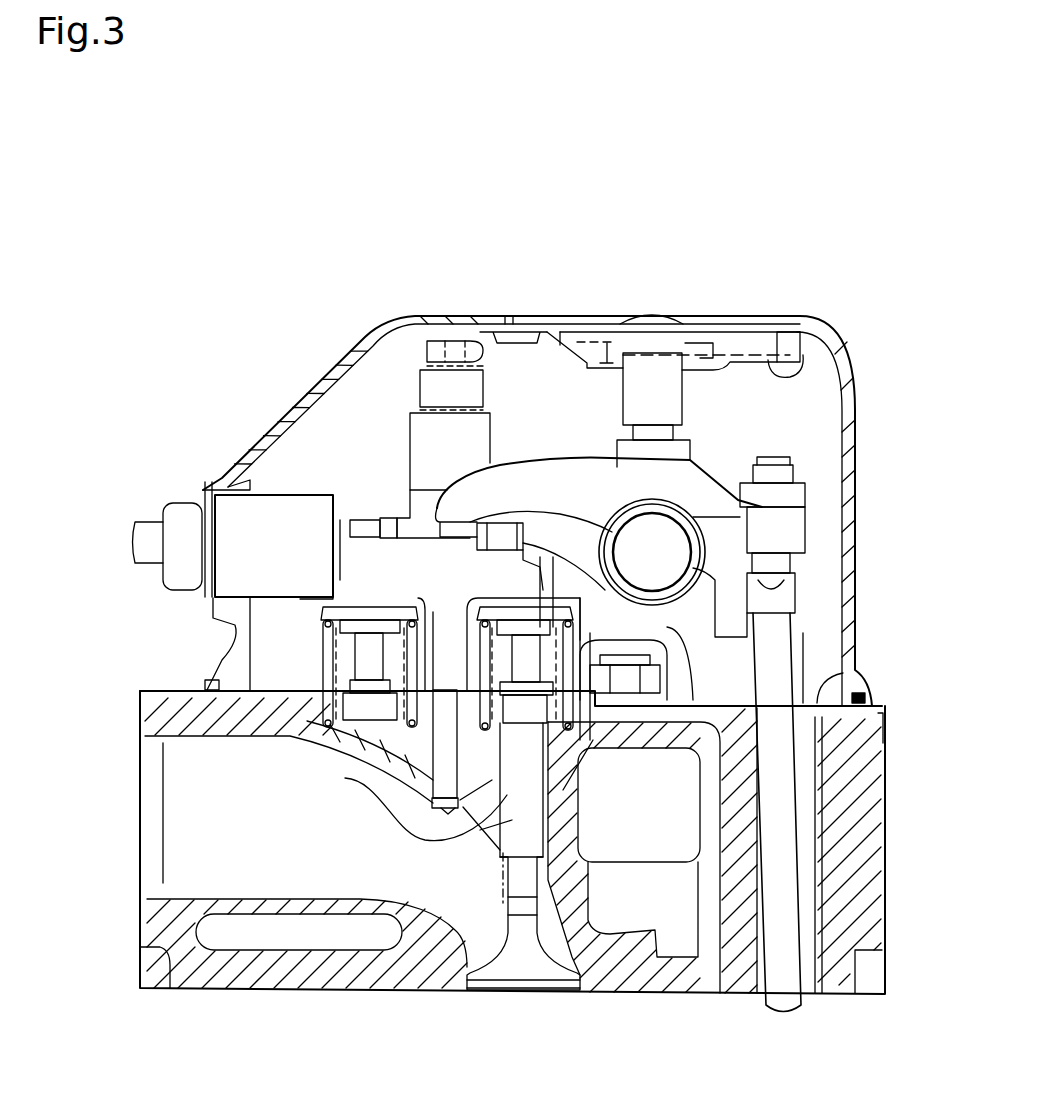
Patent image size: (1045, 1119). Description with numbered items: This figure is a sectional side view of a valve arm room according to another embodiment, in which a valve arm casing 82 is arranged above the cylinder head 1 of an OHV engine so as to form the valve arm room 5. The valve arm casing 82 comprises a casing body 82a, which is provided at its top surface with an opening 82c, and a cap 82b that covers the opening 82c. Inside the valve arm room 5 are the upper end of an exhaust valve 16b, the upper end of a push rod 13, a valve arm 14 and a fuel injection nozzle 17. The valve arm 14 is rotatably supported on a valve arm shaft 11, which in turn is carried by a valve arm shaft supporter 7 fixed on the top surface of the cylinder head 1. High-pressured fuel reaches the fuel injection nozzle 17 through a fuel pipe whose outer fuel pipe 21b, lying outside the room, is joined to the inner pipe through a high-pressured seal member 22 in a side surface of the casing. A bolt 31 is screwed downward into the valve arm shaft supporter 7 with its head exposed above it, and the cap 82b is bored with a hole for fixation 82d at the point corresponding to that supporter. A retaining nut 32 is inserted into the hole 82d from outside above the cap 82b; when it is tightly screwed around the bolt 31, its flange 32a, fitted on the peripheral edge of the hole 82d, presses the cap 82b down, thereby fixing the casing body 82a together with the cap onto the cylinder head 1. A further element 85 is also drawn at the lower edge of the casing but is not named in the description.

The cylinder head 1 is at (877, 884).
The valve arm room 5 is at (325, 432).
The valve arm shaft supporter 7 is at (680, 458).
The valve arm shaft 11 is at (660, 575).
The push rod 13 is at (780, 816).
The valve arm 14 is at (566, 478).
The exhaust valve 16b is at (367, 707).
The fuel injection nozzle 17 is at (420, 387).
The outer fuel pipe 21b is at (147, 550).
The high-pressured seal member 22 is at (276, 578).
The bolt 31 is at (660, 428).
The retaining nut 32 is at (655, 316).
The flange 32a is at (708, 355).
The valve arm casing 82 is at (566, 486).
The casing body 82a is at (848, 607).
The cap 82b is at (755, 322).
The opening 82c is at (790, 365).
The hole for fixation 82d is at (592, 333).
The seal 85 is at (832, 670).